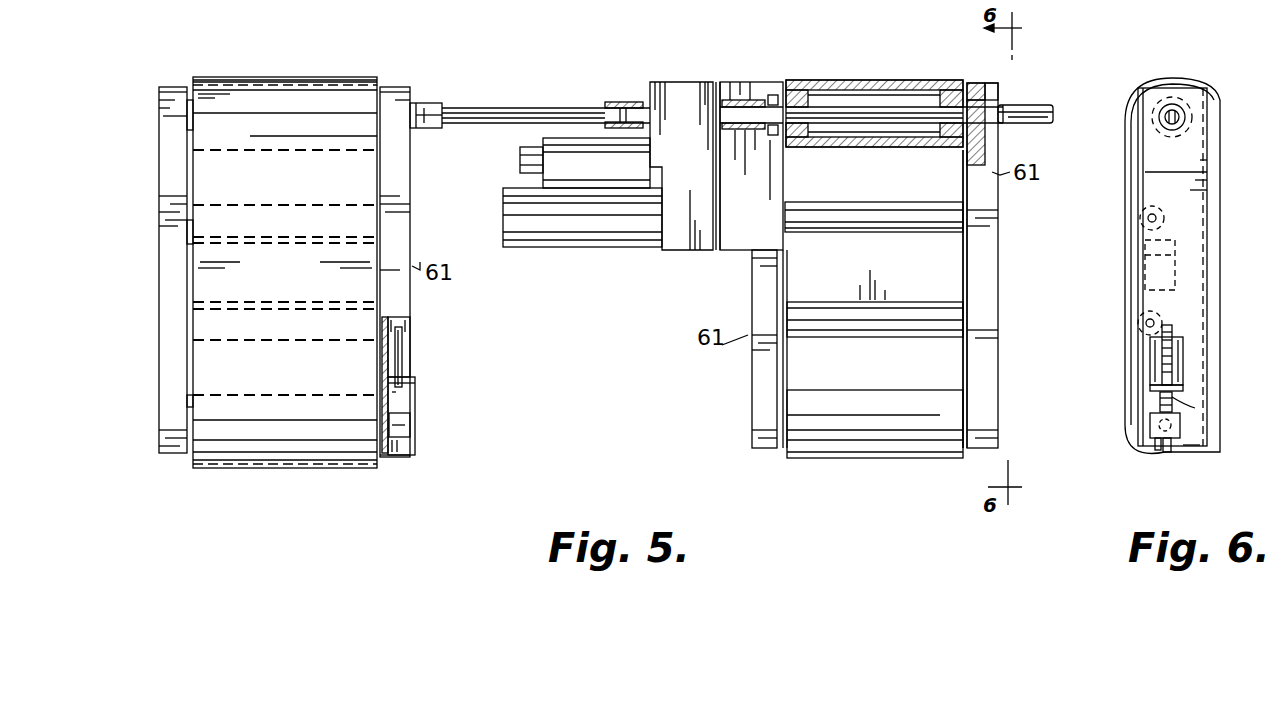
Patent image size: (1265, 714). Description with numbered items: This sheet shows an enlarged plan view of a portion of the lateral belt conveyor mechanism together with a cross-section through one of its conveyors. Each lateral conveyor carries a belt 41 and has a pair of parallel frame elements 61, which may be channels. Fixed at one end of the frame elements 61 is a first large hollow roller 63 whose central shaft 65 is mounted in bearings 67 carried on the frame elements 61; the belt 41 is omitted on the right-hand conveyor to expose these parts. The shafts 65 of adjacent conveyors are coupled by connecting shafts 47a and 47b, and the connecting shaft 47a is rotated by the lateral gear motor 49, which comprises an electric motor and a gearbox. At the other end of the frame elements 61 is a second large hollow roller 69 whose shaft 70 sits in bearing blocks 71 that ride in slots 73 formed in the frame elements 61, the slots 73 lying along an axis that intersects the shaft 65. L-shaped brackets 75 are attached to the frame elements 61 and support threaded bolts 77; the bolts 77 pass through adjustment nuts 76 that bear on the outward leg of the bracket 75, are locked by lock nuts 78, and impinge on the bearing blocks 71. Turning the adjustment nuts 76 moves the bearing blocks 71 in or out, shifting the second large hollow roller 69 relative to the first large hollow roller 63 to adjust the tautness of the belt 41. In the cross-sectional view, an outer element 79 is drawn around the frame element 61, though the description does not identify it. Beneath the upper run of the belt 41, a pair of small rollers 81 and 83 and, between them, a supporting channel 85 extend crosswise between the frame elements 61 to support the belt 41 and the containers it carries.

In FIG. 5, the belt 41 is at (298, 452).
In FIG. 5, the connecting shaft 47a is at (485, 110).
In FIG. 5, the connecting shaft 47b is at (1035, 102).
In FIG. 5, the lateral gear motor 49 is at (705, 252).
In FIG. 5, the frame element 61 is at (165, 352).
In FIG. 6, the frame element 61 is at (1190, 298).
In FIG. 6, the first large hollow roller 63 is at (1170, 77).
In FIG. 5, the central shaft 65 is at (905, 110).
In FIG. 5, the bearing 67 is at (985, 100).
In FIG. 6, the bearing 67 is at (1185, 105).
In FIG. 6, the second large hollow roller 69 is at (1195, 455).
In FIG. 6, the shaft 70 is at (1180, 427).
In FIG. 5, the bearing block 71 is at (410, 428).
In FIG. 6, the bearing block 71 is at (1152, 442).
In FIG. 6, the slot 73 is at (1167, 452).
In FIG. 5, the L-shaped bracket 75 is at (415, 386).
In FIG. 6, the L-shaped bracket 75 is at (1175, 358).
In FIG. 6, the adjustment nut 76 is at (1183, 392).
In FIG. 5, the threaded bolt 77 is at (402, 357).
In FIG. 6, the threaded bolt 77 is at (1162, 360).
In FIG. 6, the lock nut 78 is at (1195, 408).
In FIG. 6, the cover 79 is at (1127, 285).
In FIG. 5, the small roller 81 is at (950, 207).
In FIG. 5, the small roller 83 is at (945, 312).
In FIG. 5, the supporting channel 85 is at (955, 258).